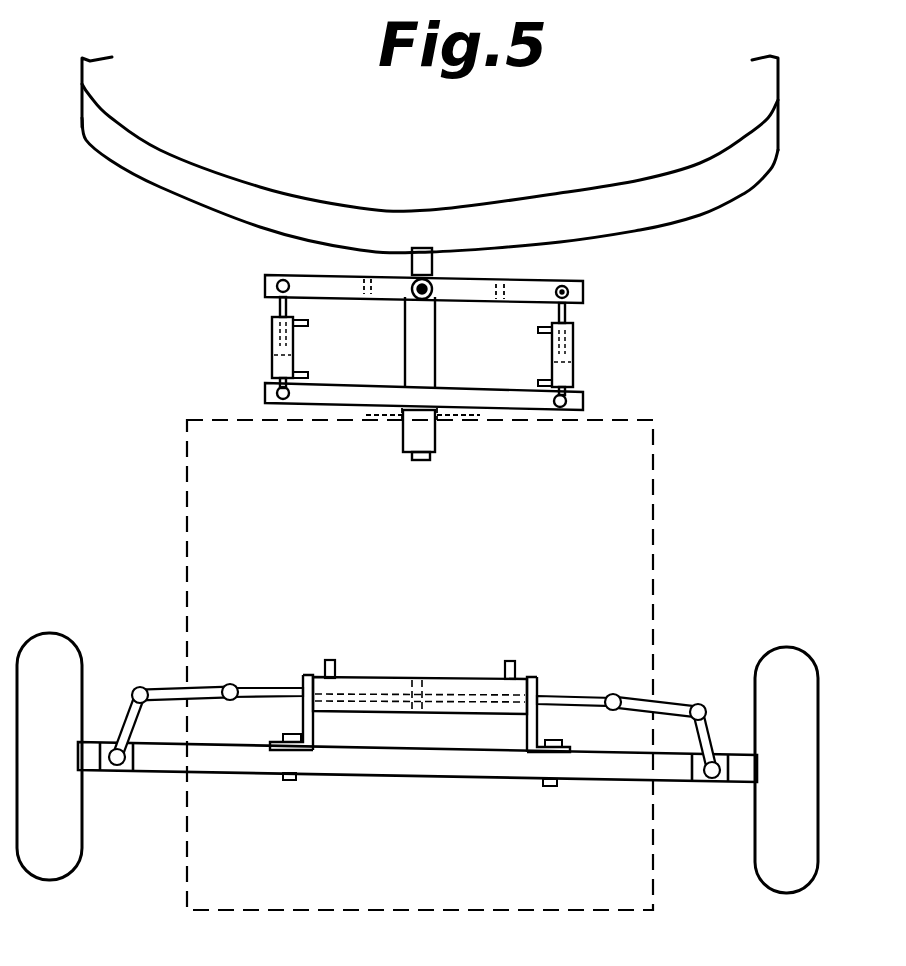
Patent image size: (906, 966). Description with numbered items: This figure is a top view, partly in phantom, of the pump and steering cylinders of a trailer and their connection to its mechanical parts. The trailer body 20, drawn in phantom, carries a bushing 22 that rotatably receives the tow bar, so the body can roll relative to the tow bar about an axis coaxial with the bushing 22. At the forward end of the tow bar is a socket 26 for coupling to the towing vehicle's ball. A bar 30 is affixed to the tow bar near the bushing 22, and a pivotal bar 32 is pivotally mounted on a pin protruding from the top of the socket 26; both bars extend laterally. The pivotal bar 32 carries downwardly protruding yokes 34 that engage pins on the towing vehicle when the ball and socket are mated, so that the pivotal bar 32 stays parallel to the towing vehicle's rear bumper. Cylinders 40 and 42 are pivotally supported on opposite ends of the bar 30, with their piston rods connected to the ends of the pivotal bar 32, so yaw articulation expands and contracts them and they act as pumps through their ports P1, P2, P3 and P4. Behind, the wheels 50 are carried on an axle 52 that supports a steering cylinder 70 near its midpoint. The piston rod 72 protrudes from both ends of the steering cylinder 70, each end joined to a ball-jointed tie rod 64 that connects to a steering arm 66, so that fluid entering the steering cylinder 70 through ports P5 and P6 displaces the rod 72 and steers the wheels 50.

The body 20 is at (657, 497).
The bushing 22 is at (437, 446).
The socket 26 is at (407, 331).
The bar 30 is at (486, 404).
The pivotal bar 32 is at (585, 284).
The yokes 34 is at (359, 288).
The cylinder 40 is at (575, 347).
The cylinder 42 is at (272, 338).
The wheels 50 is at (50, 648).
The axle 52 is at (227, 763).
The tie rod 64 is at (162, 690).
The steering arm 66 is at (128, 705).
The steering cylinder 70 is at (420, 660).
The rod 72 is at (255, 689).
The cylinder port P1 is at (309, 323).
The cylinder port P2 is at (309, 376).
The cylinder port P3 is at (540, 329).
The cylinder port P4 is at (540, 380).
The port P5 is at (330, 659).
The port P6 is at (520, 626).